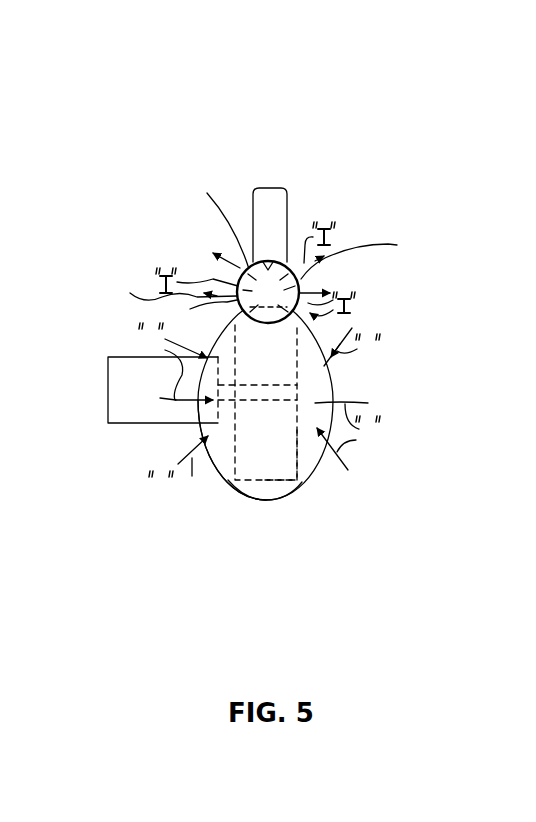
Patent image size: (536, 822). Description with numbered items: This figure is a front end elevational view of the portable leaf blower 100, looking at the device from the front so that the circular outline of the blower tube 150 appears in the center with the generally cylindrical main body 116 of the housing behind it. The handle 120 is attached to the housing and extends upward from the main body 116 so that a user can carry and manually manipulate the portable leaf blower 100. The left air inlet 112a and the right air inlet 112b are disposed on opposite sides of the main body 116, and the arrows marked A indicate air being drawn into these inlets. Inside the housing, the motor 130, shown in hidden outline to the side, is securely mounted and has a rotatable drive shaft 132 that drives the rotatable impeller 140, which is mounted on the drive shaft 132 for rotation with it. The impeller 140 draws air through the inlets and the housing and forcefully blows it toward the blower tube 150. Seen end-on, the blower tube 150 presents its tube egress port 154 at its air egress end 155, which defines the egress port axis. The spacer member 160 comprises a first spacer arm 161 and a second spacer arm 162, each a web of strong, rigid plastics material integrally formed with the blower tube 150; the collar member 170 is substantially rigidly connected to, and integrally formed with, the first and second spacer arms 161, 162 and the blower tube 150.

The portable leaf blower 100 is at (422, 74).
The left air inlet 112a is at (333, 386).
The right air inlet 112b is at (211, 438).
The main body 116 is at (263, 497).
The handle 120 is at (269, 200).
The motor 130 is at (108, 385).
The drive shaft 132 is at (258, 400).
The rotatable impeller 140 is at (296, 470).
The blower tube 150 is at (256, 322).
The tube egress port 154 is at (281, 261).
The air egress end 155 is at (314, 279).
The spacer member 160 is at (278, 273).
The first spacer arm 161 is at (388, 254).
The second spacer arm 162 is at (159, 305).
The collar member 170 is at (217, 213).